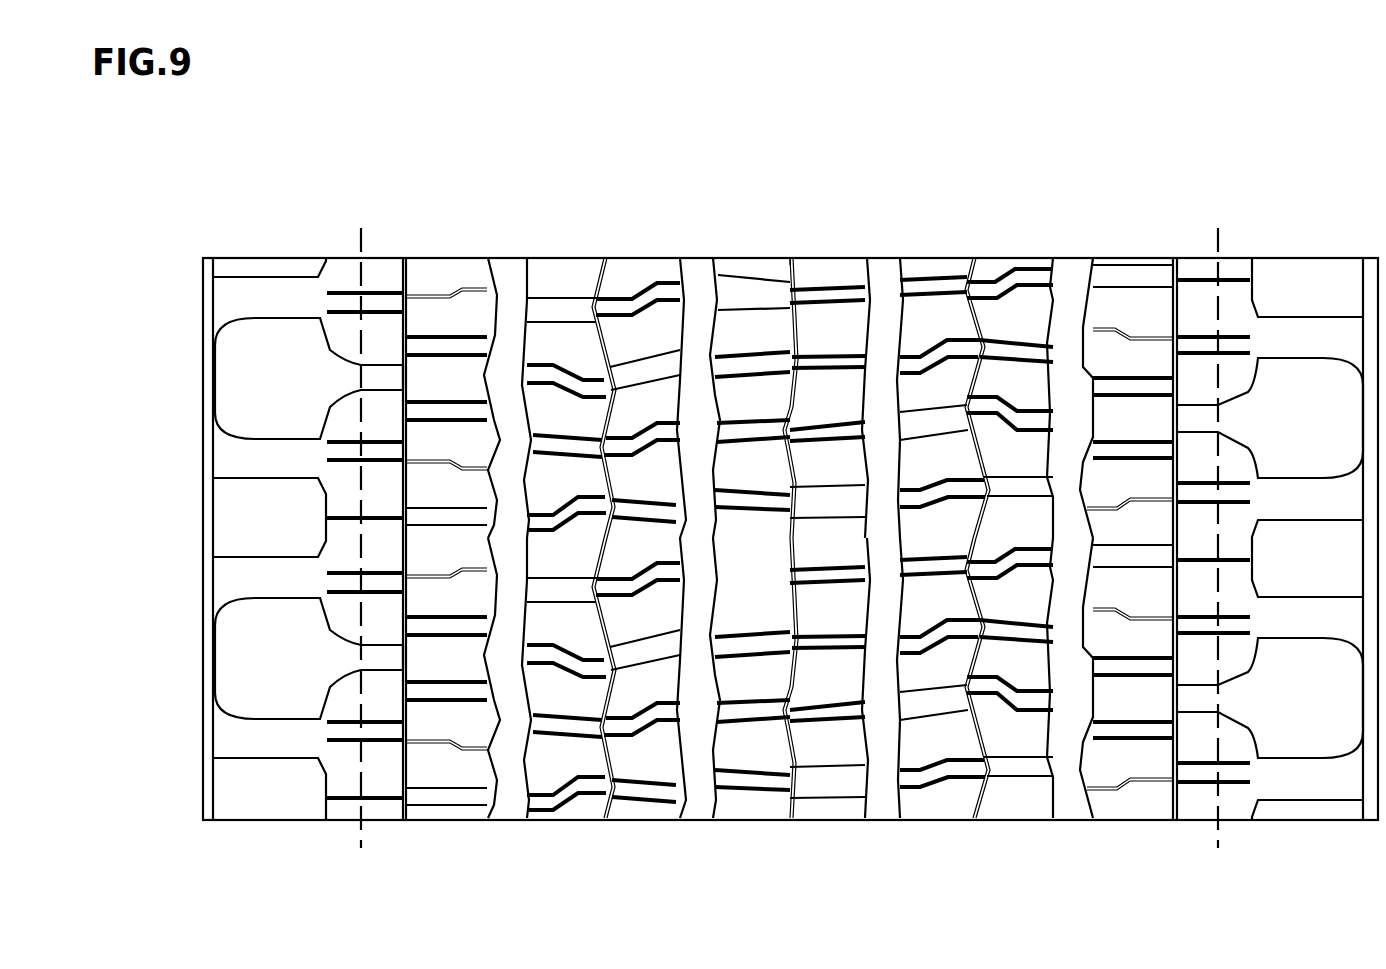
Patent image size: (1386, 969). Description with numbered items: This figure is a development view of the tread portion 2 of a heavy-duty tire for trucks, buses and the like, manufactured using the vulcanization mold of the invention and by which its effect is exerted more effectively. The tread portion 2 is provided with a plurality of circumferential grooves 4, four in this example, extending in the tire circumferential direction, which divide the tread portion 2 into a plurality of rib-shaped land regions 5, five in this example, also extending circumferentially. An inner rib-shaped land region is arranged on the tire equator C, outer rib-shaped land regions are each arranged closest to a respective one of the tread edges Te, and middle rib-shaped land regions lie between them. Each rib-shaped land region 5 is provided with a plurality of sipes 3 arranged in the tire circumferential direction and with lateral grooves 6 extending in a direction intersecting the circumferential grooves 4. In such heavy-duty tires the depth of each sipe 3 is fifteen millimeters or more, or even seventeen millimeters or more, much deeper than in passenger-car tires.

The tread portion 2 is at (1072, 216).
The sipes 3 is at (838, 283).
The circumferential grooves 4 is at (505, 800).
The rib-shaped land regions 5 is at (485, 828).
The lateral grooves 6 is at (745, 290).
The tire equator C is at (789, 258).
The tread edges Te is at (360, 265).